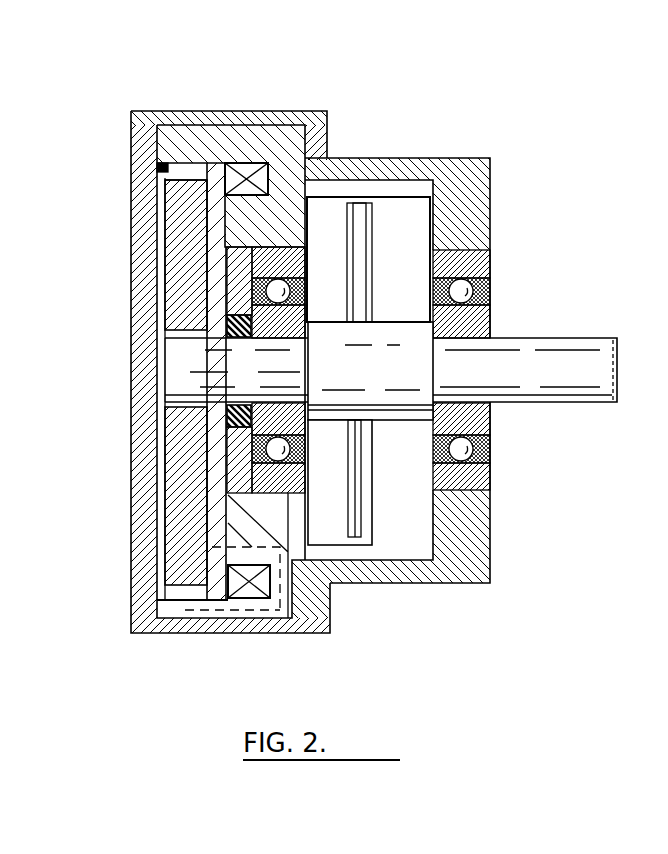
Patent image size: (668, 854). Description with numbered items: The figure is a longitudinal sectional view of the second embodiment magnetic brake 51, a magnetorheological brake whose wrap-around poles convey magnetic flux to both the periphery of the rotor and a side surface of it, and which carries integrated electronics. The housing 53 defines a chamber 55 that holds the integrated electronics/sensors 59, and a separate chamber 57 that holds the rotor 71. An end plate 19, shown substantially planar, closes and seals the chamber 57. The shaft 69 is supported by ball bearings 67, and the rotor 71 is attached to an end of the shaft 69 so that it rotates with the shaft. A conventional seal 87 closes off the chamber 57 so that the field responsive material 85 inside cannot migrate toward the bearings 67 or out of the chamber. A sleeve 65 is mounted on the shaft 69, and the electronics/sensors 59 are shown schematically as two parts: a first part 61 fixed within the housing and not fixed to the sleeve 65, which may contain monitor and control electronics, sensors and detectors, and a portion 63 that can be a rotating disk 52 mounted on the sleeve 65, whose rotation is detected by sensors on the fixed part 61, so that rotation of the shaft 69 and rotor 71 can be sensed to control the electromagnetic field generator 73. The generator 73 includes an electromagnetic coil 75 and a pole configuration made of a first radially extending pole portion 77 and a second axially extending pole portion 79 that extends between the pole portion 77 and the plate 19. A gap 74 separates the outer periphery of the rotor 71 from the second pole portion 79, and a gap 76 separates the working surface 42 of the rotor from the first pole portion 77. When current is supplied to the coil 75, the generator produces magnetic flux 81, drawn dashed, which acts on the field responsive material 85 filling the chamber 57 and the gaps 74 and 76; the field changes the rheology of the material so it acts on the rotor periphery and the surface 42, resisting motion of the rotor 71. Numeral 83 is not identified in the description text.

The end plate 19 is at (132, 265).
The working surface 42 is at (217, 217).
The magnetic brake 51 is at (488, 108).
The rotating disk 52 is at (355, 477).
The housing 53 is at (477, 222).
The chamber 55 is at (420, 467).
The chamber 57 is at (158, 537).
The integrated electronics/sensors 59 is at (332, 228).
The first part 61 is at (330, 195).
The portion 63 is at (373, 233).
The sleeve 65 is at (362, 358).
The ball bearings 67 is at (468, 292).
The shaft 69 is at (177, 370).
The rotor 71 is at (194, 183).
The electromagnetic field generator 73 is at (287, 592).
The gap 74 is at (178, 180).
The electromagnetic coil 75 is at (255, 593).
The gap 76 is at (215, 188).
The first radially extending pole portion 77 is at (252, 543).
The second axially extending pole portion 79 is at (183, 613).
The magnetic flux 81 is at (130, 475).
The recess 83 is at (158, 612).
The field responsive material 85 is at (160, 170).
The seal 87 is at (228, 327).